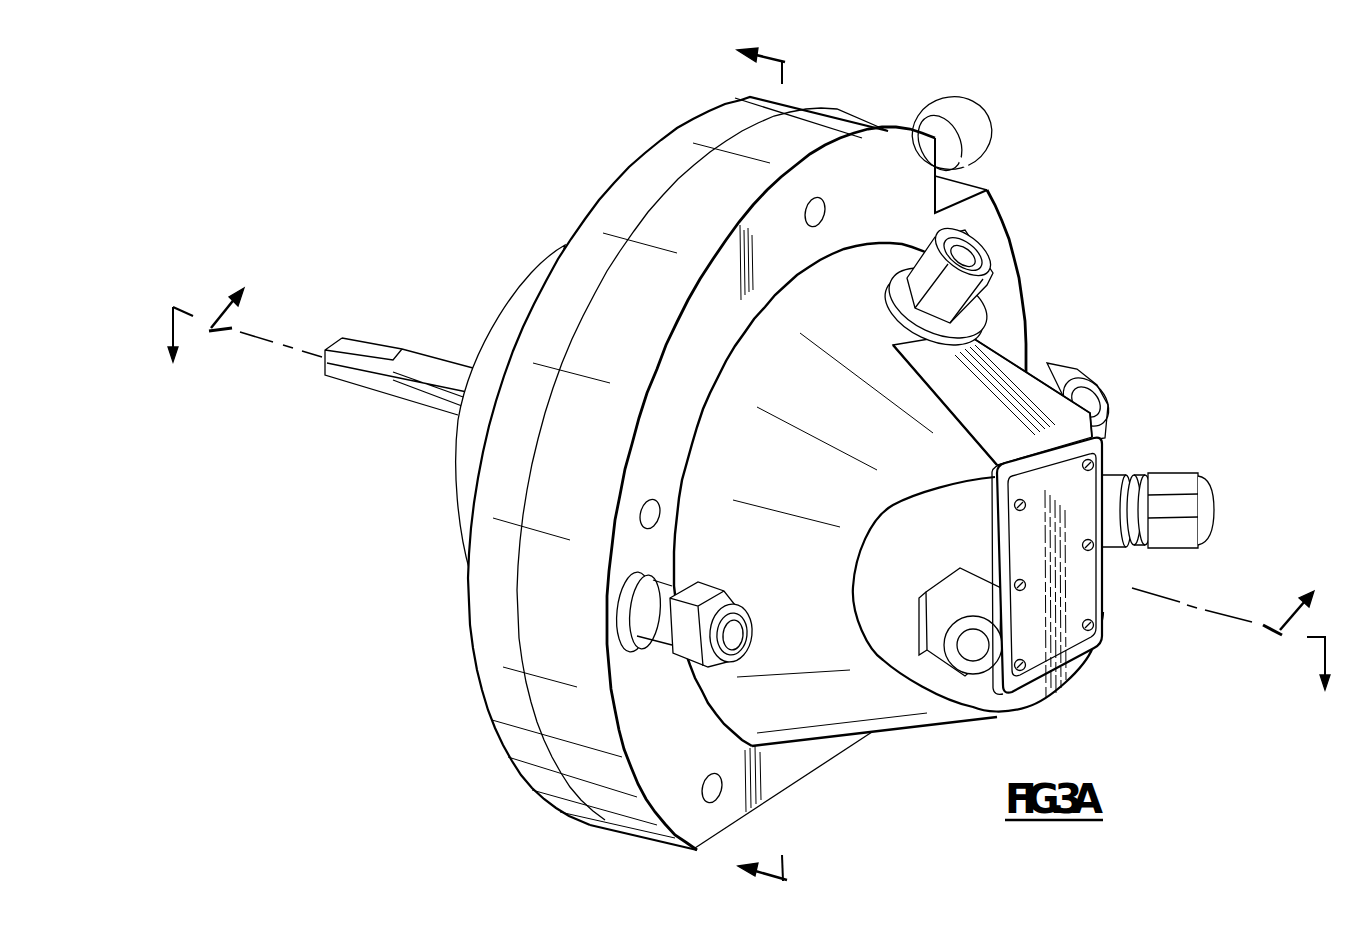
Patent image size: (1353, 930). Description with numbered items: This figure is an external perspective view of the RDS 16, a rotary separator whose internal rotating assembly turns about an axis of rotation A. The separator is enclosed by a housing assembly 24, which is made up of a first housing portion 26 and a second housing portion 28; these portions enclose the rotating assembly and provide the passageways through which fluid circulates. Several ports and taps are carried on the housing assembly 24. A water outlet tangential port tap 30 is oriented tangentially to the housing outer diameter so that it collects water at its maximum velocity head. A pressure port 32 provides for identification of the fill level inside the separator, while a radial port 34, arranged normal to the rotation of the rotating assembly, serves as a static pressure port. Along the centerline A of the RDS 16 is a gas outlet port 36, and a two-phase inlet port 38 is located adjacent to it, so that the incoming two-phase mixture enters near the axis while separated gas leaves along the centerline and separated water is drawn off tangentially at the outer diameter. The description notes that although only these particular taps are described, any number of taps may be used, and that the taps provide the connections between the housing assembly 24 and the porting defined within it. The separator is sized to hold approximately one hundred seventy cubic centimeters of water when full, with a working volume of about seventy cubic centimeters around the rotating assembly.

The RDS 16 is at (1168, 212).
The housing assembly 24 is at (1010, 190).
The first housing portion 26 is at (839, 128).
The second housing portion 28 is at (790, 108).
The water outlet tangential port tap 30 is at (965, 110).
The pressure port 32 is at (978, 297).
The radial port 34 is at (645, 632).
The gas outlet port 36 is at (1094, 571).
The two-phase inlet port 38 is at (940, 647).
The axis of rotation A is at (1215, 610).